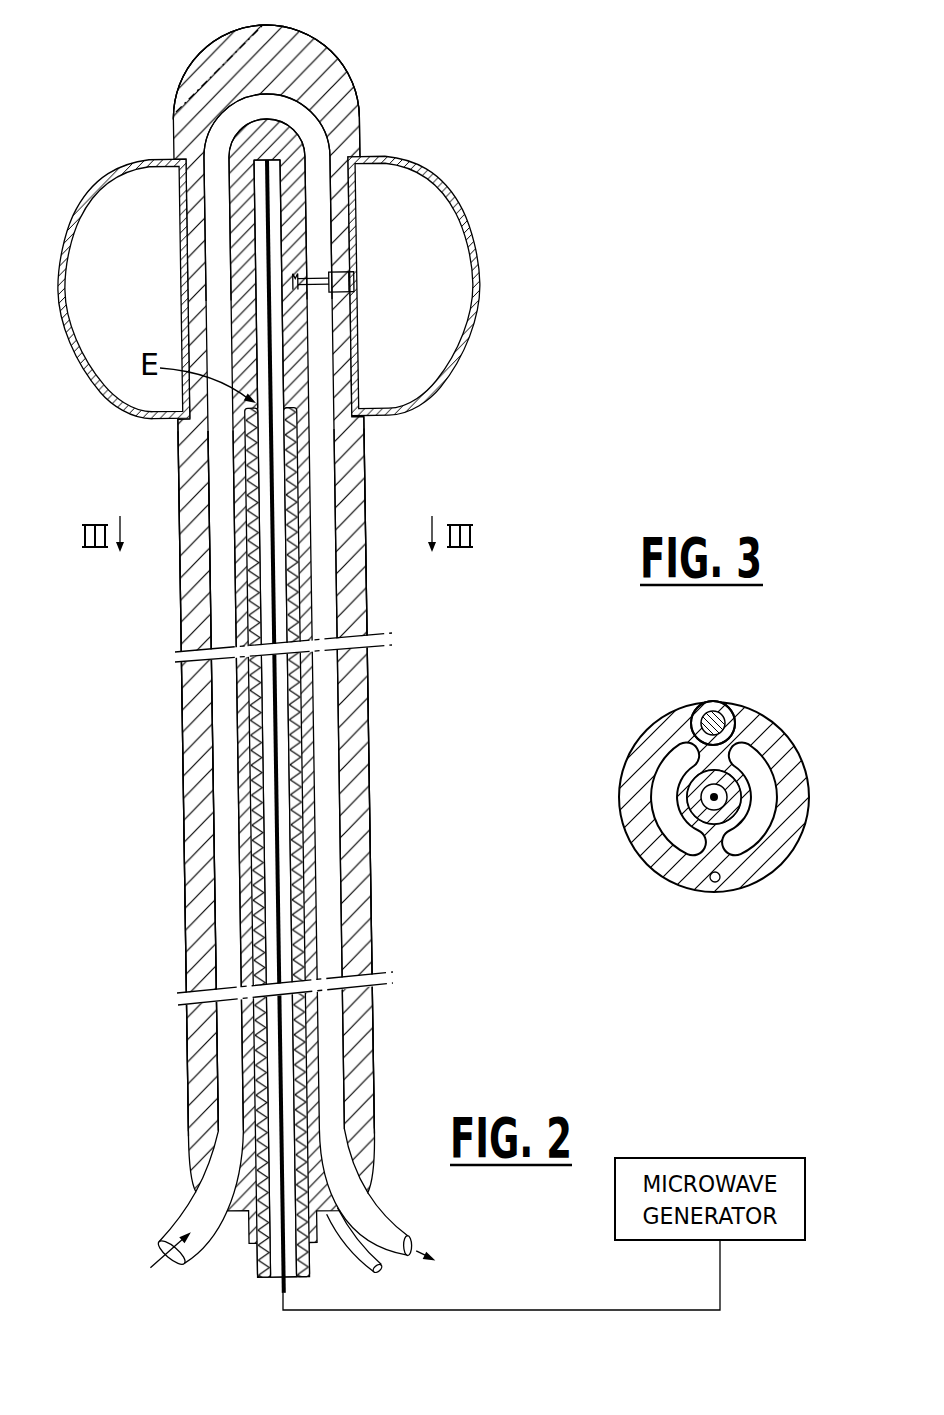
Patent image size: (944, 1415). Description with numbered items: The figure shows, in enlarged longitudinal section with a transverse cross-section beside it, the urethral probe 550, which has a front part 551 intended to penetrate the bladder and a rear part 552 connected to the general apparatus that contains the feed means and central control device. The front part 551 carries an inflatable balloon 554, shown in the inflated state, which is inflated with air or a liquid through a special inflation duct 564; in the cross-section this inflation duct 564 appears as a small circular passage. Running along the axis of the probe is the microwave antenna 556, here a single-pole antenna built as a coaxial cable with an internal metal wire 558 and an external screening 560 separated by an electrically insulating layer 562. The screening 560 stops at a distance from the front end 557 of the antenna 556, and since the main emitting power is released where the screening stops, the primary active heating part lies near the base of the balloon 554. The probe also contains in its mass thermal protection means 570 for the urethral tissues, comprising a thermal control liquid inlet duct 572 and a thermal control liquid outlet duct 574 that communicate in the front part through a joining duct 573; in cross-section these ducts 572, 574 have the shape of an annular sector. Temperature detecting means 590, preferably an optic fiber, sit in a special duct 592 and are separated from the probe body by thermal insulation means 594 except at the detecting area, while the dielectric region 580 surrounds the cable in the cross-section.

In FIG. 2, the urethral probe 550 is at (388, 922).
In FIG. 3, the urethral probe 550 is at (676, 908).
In FIG. 2, the front part 551 is at (255, 52).
In FIG. 2, the rear part 552 is at (208, 1192).
In FIG. 2, the inflatable balloon 554 is at (478, 248).
In FIG. 2, the microwave antenna 556 is at (290, 455).
In FIG. 3, the microwave antenna 556 is at (738, 752).
In FIG. 2, the front end 557 is at (272, 158).
In FIG. 2, the internal metal wire 558 is at (265, 185).
In FIG. 2, the external screening 560 is at (300, 622).
In FIG. 2, the electrically insulating layer 562 is at (272, 380).
In FIG. 2, the inflation duct 564 is at (343, 272).
In FIG. 3, the inflation duct 564 is at (716, 884).
In FIG. 2, the thermal protection means 570 is at (216, 762).
In FIG. 2, the thermal control liquid inlet duct 572 is at (225, 918).
In FIG. 3, the thermal control liquid inlet duct 572 is at (660, 808).
In FIG. 2, the joining duct 573 is at (290, 110).
In FIG. 2, the thermal control liquid outlet duct 574 is at (340, 1042).
In FIG. 3, the thermal control liquid outlet duct 574 is at (758, 828).
In FIG. 3, the dielectric 580 is at (692, 788).
In FIG. 3, the temperature detecting means 590 is at (712, 718).
In FIG. 3, the special duct 592 is at (683, 723).
In FIG. 3, the thermal insulation means 594 is at (727, 705).